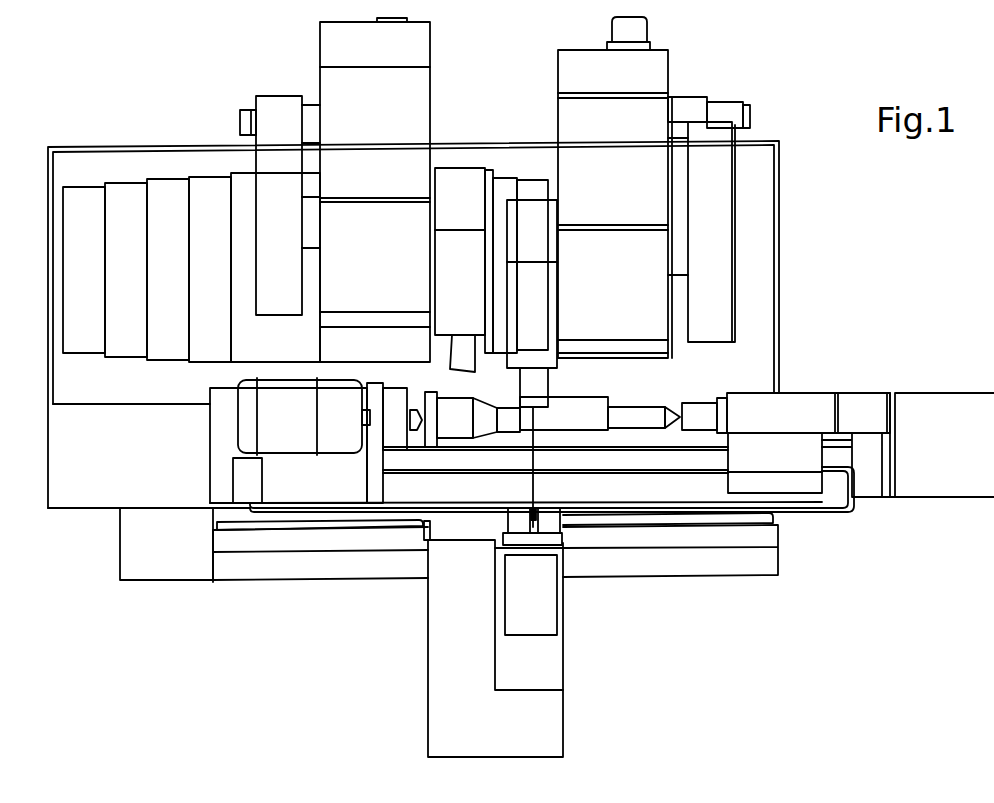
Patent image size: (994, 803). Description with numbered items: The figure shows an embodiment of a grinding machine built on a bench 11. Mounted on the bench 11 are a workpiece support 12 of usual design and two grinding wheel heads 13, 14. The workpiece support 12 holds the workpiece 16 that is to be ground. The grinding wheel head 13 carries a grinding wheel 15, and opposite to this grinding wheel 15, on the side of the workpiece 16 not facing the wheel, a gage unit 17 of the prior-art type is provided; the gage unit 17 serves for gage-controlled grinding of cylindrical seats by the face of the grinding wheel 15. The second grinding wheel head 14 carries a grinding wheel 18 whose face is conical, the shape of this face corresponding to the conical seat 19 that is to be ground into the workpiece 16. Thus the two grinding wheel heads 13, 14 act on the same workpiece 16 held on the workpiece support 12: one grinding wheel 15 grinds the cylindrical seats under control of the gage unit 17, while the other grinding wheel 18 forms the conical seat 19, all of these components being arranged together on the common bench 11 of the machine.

The bench 11 is at (762, 173).
The workpiece support 12 is at (950, 408).
The grinding wheel head 13 is at (623, 171).
The grinding wheel head 14 is at (380, 143).
The grinding wheel 15 is at (543, 383).
The workpiece 16 is at (638, 413).
The gage unit 17 is at (545, 612).
The grinding wheel 18 is at (458, 357).
The conical seat 19 is at (480, 410).